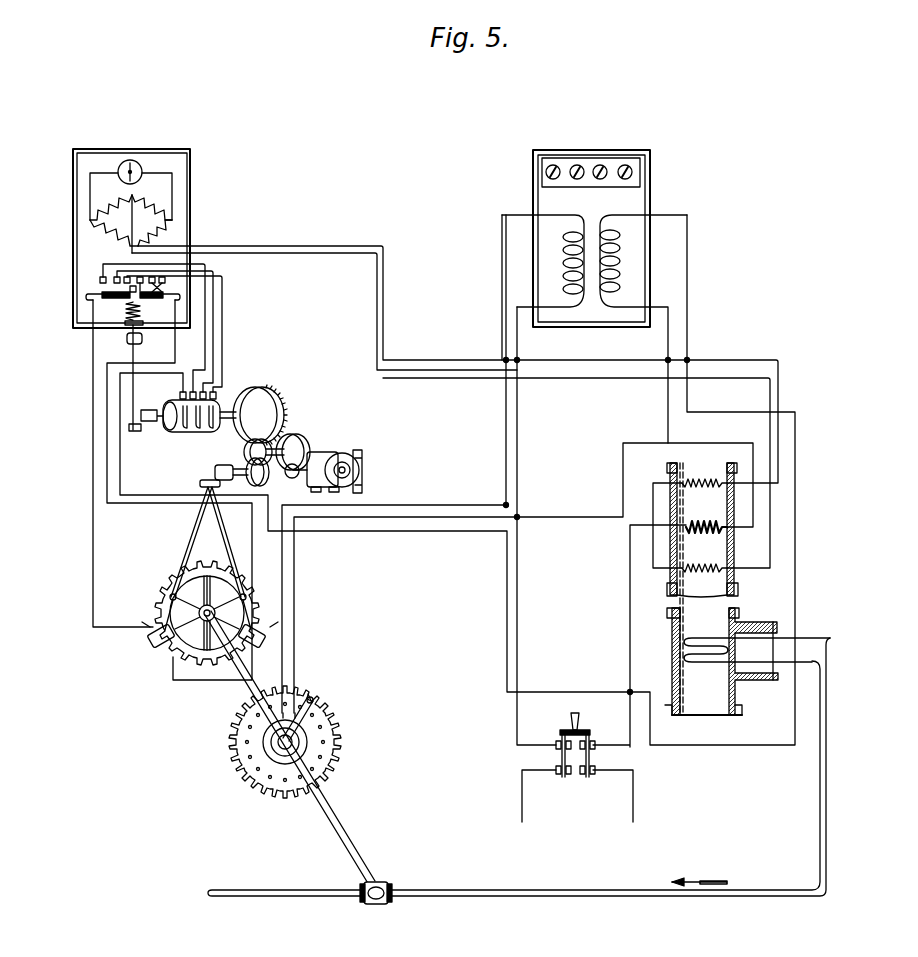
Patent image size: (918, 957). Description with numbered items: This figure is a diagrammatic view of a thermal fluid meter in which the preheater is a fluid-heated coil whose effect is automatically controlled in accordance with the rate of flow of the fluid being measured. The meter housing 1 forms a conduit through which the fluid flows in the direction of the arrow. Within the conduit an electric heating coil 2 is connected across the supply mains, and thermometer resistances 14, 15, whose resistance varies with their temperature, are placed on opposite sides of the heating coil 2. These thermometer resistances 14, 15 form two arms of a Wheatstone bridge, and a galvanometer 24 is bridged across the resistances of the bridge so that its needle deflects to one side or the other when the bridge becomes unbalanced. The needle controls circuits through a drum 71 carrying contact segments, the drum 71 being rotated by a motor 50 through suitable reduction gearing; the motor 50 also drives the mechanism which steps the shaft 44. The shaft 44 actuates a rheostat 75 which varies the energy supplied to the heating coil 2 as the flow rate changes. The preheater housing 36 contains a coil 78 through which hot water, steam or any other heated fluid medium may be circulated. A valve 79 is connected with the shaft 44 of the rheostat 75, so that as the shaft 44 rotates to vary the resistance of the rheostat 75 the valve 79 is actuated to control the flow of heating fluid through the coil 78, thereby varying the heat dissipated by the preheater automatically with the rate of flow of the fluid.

The galvanometer 24 is at (138, 165).
The drum 71 is at (221, 407).
The motor 50 is at (330, 457).
The rheostat 75 is at (337, 728).
The shaft 44 is at (337, 813).
The valve 79 is at (383, 883).
The thermometer resistance 15 is at (707, 475).
The electric heating coil 2 is at (715, 522).
The housing 1 is at (733, 543).
The thermometer resistance 14 is at (723, 563).
The housing for the preheater 36 is at (675, 659).
The coil 78 is at (700, 655).